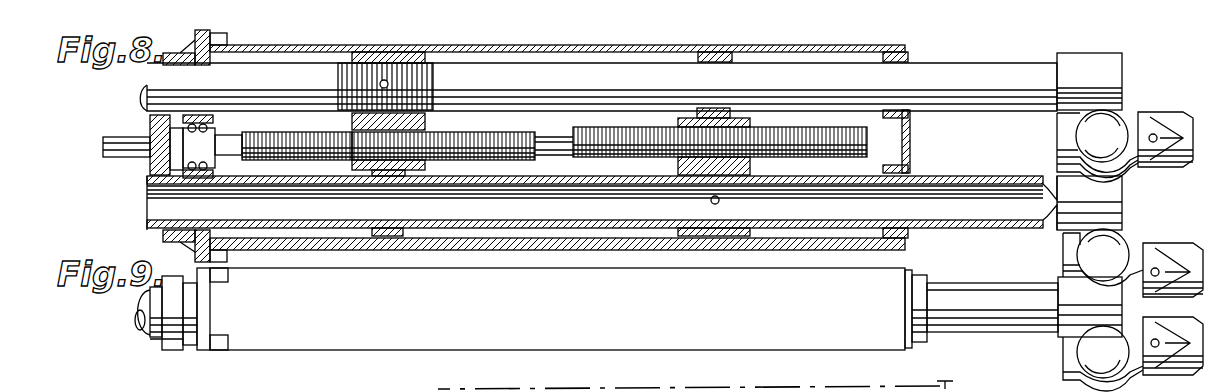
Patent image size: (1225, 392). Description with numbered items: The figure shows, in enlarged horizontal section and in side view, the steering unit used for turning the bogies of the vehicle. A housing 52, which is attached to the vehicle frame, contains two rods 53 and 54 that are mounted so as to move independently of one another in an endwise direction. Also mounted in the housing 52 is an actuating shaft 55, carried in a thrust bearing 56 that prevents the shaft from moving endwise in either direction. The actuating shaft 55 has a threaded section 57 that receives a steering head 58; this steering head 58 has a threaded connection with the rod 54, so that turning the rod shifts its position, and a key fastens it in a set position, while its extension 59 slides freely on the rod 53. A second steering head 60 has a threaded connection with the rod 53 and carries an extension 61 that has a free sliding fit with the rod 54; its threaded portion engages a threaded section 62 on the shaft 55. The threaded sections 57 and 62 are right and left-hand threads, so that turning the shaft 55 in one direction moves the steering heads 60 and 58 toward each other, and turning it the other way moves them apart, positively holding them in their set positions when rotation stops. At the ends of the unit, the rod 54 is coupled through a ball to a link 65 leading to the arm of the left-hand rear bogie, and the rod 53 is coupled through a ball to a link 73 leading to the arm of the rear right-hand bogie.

In FIG. 8, the housing 52 is at (492, 42).
In FIG. 9, the housing 52 is at (551, 309).
In FIG. 8, the rod 53 is at (840, 225).
In FIG. 9, the rod 53 is at (143, 337).
In FIG. 8, the rod 54 is at (760, 68).
In FIG. 8, the actuating shaft 55 is at (229, 141).
In FIG. 8, the thrust bearing 56 is at (212, 158).
In FIG. 8, the threaded section 57 is at (487, 140).
In FIG. 8, the steering head 58 is at (388, 60).
In FIG. 8, the extension 59 is at (402, 237).
In FIG. 8, the steering head 60 is at (682, 165).
In FIG. 8, the extension 61 is at (716, 57).
In FIG. 8, the threaded section 62 is at (770, 130).
In FIG. 9, the link 65 is at (1196, 362).
In FIG. 8, the link 73 is at (1182, 120).
In FIG. 9, the link 73 is at (1195, 258).